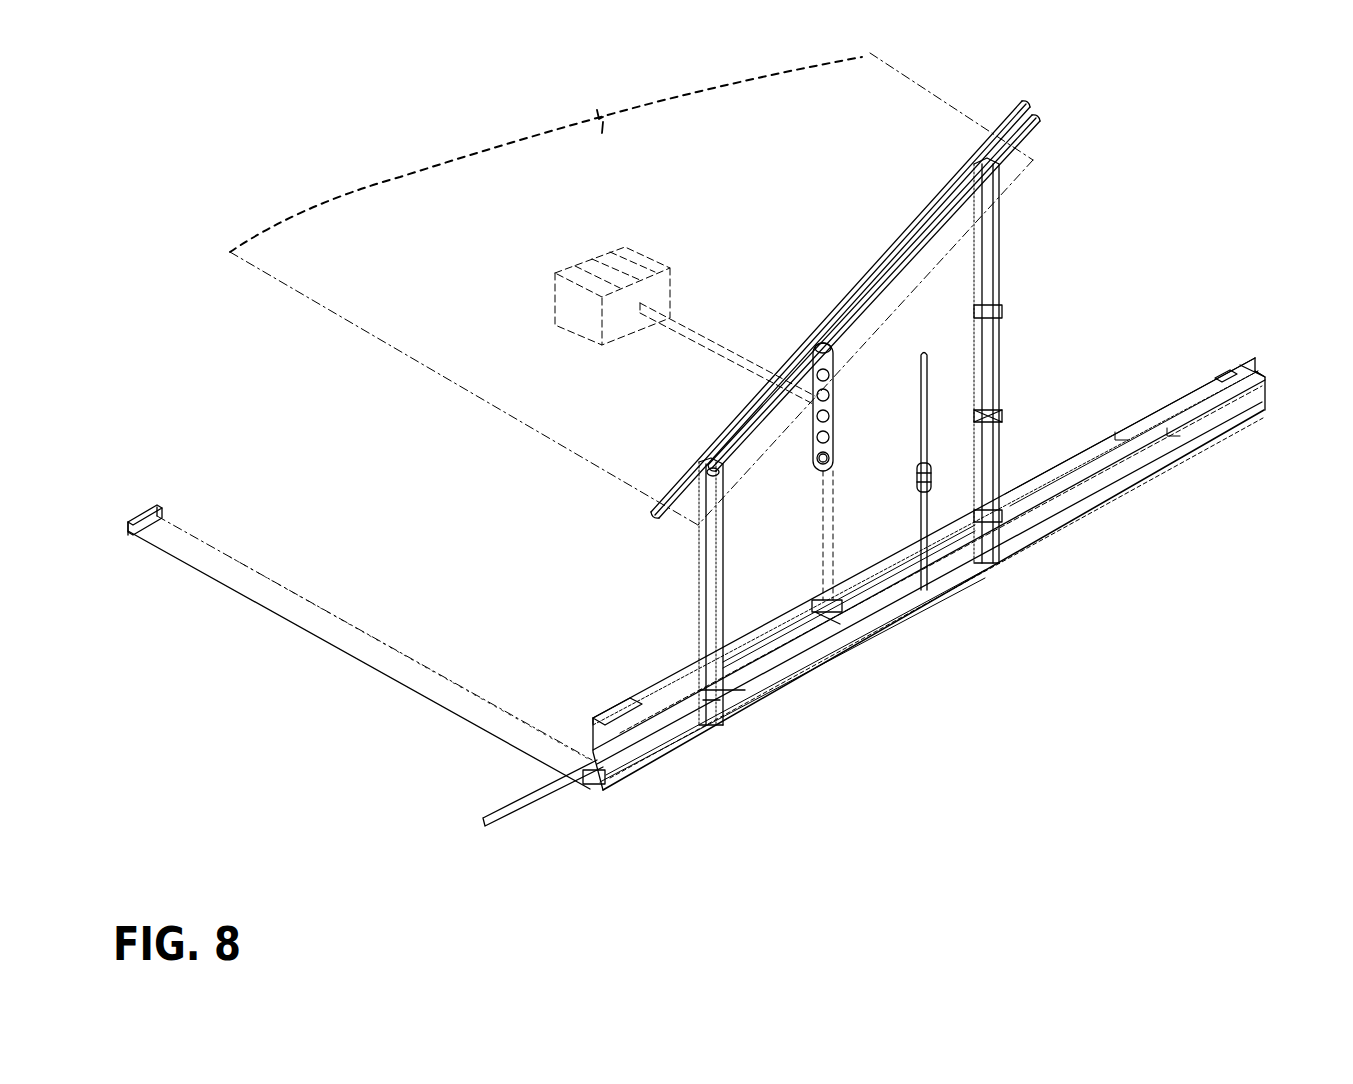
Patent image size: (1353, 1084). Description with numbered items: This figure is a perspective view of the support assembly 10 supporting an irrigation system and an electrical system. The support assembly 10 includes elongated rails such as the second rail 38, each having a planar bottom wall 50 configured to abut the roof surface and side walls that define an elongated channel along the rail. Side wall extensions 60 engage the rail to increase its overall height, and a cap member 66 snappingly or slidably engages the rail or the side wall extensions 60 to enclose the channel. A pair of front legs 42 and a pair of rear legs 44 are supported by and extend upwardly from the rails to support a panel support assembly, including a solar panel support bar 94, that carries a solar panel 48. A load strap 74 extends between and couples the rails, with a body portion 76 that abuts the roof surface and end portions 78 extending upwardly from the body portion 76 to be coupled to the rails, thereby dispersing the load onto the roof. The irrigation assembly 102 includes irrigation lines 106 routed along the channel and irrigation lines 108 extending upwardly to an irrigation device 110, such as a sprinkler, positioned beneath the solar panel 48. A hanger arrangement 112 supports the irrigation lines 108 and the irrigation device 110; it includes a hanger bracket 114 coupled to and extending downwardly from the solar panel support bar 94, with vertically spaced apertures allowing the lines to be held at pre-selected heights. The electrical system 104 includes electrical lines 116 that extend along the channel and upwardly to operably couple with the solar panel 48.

The support assembly 10 is at (1078, 256).
The second rail 38 is at (939, 558).
The front legs 42 is at (688, 572).
The rear legs 44 is at (1002, 342).
The solar panel 48 is at (930, 92).
The bottom wall 50 is at (1255, 414).
The side wall extensions 60 is at (1133, 420).
The cap member 66 is at (612, 706).
The load strap 74 is at (360, 634).
The body portion 76 is at (232, 570).
The end portions 78 is at (157, 505).
The solar panel support bar 94 is at (908, 218).
The irrigation assembly 102 is at (742, 652).
The electrical system 104 is at (886, 472).
The irrigation lines 106 is at (665, 705).
The irrigation lines 108 is at (916, 506).
The irrigation device 110 is at (575, 333).
The hanger arrangement 112 is at (882, 465).
The hanger bracket 114 is at (834, 404).
The electrical lines 116 is at (832, 456).